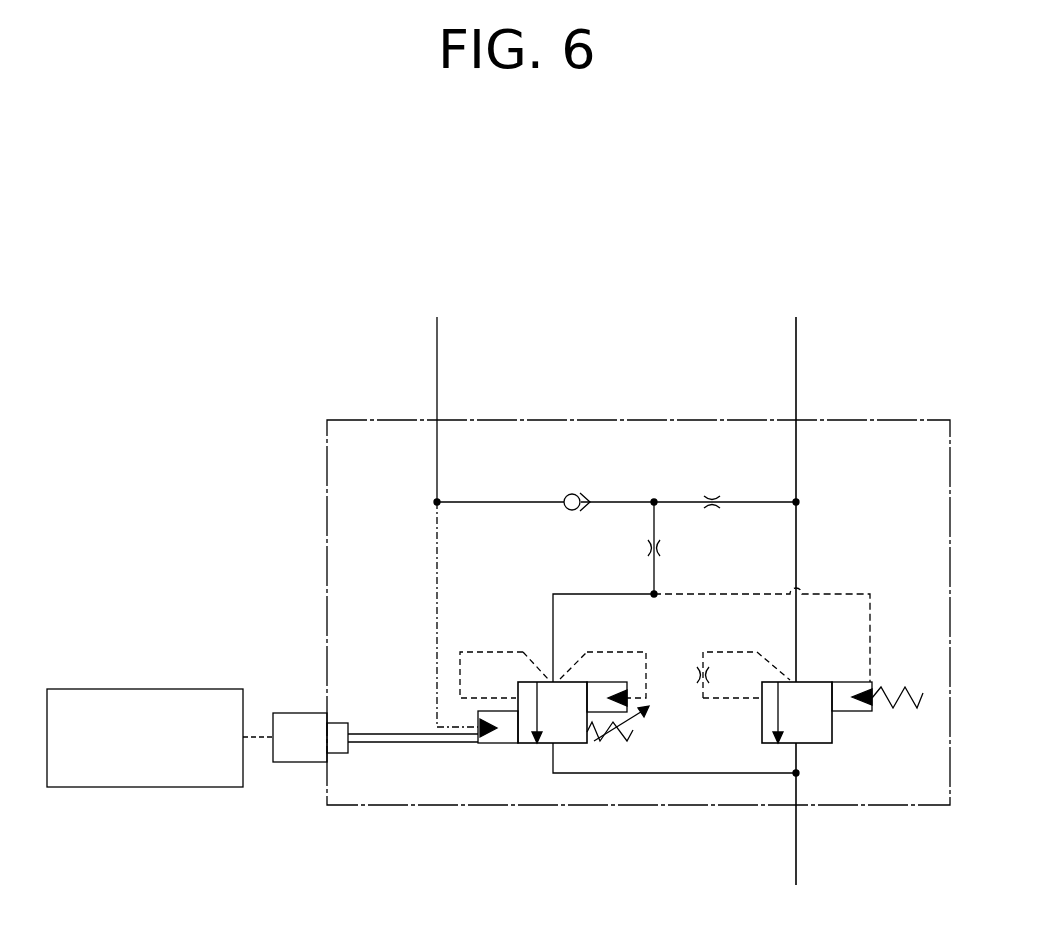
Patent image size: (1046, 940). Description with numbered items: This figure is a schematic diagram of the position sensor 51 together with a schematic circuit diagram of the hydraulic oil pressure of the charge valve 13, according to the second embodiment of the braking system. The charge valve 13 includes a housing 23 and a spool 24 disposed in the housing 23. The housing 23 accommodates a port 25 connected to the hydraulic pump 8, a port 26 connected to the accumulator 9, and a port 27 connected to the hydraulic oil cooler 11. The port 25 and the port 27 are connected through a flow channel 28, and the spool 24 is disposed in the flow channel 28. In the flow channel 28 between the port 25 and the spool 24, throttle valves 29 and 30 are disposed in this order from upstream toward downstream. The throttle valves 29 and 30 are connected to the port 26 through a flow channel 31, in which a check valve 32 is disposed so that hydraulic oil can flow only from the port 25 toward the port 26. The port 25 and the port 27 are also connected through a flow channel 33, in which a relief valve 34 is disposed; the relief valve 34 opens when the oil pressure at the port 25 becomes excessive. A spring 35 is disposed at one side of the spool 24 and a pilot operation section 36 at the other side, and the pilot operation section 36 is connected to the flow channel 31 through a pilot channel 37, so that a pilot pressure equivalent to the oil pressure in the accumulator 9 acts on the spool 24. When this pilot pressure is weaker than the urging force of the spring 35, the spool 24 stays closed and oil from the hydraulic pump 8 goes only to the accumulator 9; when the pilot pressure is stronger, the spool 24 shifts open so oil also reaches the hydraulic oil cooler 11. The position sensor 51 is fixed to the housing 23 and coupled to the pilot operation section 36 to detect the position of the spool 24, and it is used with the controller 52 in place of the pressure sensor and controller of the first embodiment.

The charge valve 13 is at (304, 227).
The housing 23 is at (327, 630).
The accumulator 9 is at (451, 300).
The hydraulic pump 8 is at (780, 300).
The hydraulic oil cooler 11 is at (781, 901).
The port 26 is at (437, 420).
The port 25 is at (797, 420).
The flow channel 33 is at (798, 531).
The port 27 is at (797, 807).
The flow channel 31 is at (482, 502).
The check valve 32 is at (578, 495).
The throttle valve 29 is at (712, 498).
The throttle valve 30 is at (660, 548).
The flow channel 28 is at (600, 594).
The pilot channel 37 is at (437, 540).
The spool 24 is at (538, 745).
The pilot operation section 36 is at (486, 745).
The spring 35 is at (634, 731).
The relief valve 34 is at (833, 732).
The position sensor 51 is at (300, 763).
The controller 52 is at (197, 789).